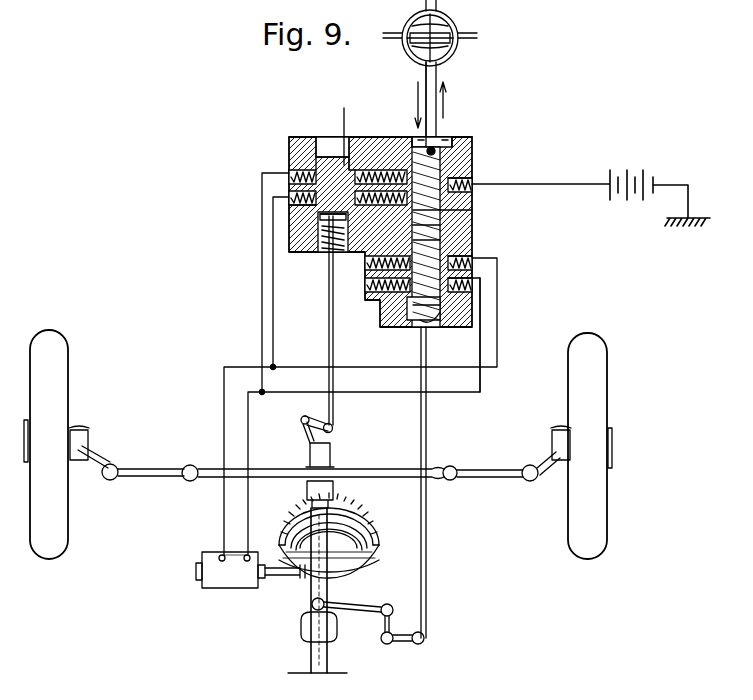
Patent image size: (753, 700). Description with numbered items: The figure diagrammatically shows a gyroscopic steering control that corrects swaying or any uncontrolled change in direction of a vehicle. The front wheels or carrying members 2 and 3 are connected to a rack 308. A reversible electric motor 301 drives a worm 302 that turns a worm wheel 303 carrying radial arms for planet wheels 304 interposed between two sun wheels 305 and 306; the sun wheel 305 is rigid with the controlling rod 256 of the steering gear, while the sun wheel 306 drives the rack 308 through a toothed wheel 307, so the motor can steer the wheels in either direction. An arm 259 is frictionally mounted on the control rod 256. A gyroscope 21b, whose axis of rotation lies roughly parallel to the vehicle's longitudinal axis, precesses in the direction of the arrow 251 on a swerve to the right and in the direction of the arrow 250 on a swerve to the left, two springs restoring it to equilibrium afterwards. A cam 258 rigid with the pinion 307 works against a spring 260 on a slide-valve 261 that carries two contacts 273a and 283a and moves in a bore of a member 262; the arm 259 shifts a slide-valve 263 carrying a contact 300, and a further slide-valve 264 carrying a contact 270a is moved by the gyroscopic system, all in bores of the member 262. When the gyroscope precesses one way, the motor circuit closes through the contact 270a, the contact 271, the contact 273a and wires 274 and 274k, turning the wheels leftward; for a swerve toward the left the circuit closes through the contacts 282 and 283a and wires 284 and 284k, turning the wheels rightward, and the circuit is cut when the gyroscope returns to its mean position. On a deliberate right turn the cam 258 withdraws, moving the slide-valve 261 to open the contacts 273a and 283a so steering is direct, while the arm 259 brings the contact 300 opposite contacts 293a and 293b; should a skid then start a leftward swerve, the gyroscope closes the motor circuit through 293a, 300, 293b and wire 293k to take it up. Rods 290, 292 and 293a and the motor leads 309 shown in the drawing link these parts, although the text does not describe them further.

The front wheel 2 is at (585, 358).
The front wheel 3 is at (55, 352).
The gyroscope 21b is at (455, 30).
The arrow 250 is at (414, 115).
The arrow 251 is at (446, 112).
The controlling rod 256 is at (328, 652).
The cam 258 is at (330, 443).
The arm 259 is at (327, 623).
The spring 260 is at (292, 240).
The slide-valve 261 is at (344, 137).
The member 262 is at (380, 137).
The slide-valve 263 is at (472, 266).
The slide-valve 264 is at (472, 150).
The contact 270a is at (472, 178).
The contact 271 is at (437, 143).
The contact 273a is at (303, 137).
The wire 274 is at (262, 280).
The wire 274k is at (248, 411).
The contact 282 is at (345, 225).
The contact 283a is at (300, 206).
The wire 284 is at (273, 303).
The wire 284k is at (224, 374).
The follow-up rod 290 is at (330, 318).
The spring 292 is at (336, 262).
The contact 293a is at (400, 298).
The contact 293b is at (470, 283).
The wire 293k is at (480, 322).
The contact 300 is at (472, 226).
The electric motor 301 is at (220, 578).
The worm 302 is at (303, 573).
The worm wheel 303 is at (362, 518).
The planet wheels 304 is at (366, 536).
The sun wheel 305 is at (345, 557).
The sun wheel 306 is at (345, 508).
The toothed wheel 307 is at (312, 462).
The rack 308 is at (240, 478).
The motor leads 309 is at (260, 530).